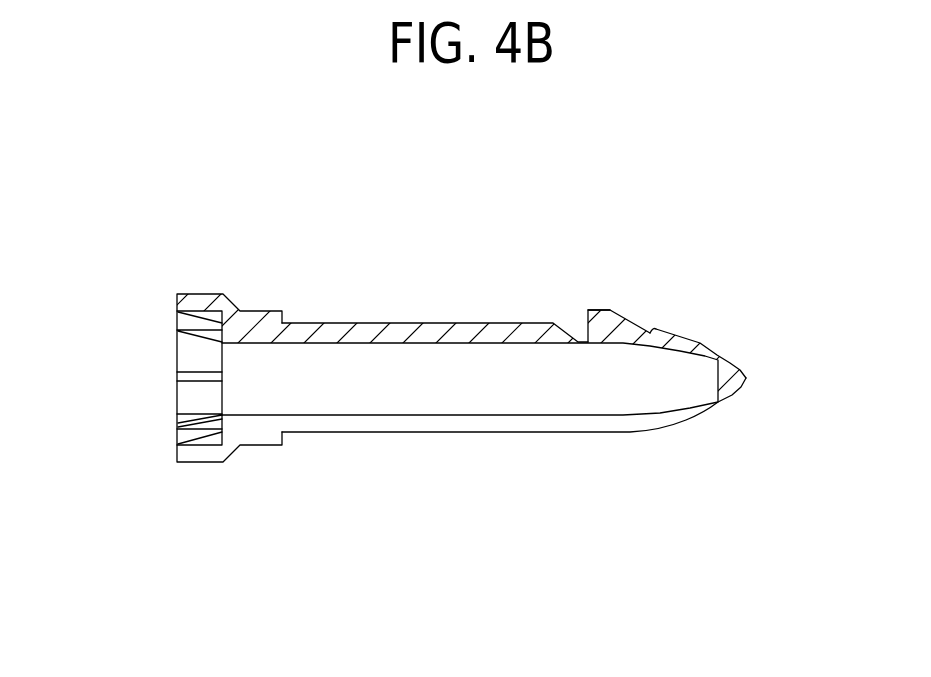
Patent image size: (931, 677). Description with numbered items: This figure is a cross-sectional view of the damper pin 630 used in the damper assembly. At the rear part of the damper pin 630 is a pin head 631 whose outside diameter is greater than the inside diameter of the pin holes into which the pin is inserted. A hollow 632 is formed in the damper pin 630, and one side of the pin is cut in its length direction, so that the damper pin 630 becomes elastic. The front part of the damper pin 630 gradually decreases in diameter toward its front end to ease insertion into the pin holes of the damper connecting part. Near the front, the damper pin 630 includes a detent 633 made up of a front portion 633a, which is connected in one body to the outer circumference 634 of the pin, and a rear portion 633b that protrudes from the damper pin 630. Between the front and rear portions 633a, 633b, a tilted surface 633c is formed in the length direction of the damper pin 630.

The damper pin 630 is at (444, 464).
The pin head 631 is at (197, 302).
The hollow 632 is at (245, 398).
The detent 633 is at (580, 312).
The front portion 633a is at (653, 333).
The rear portion 633b is at (603, 310).
The tilted surface 633c is at (626, 320).
The outer circumference 634 is at (428, 322).